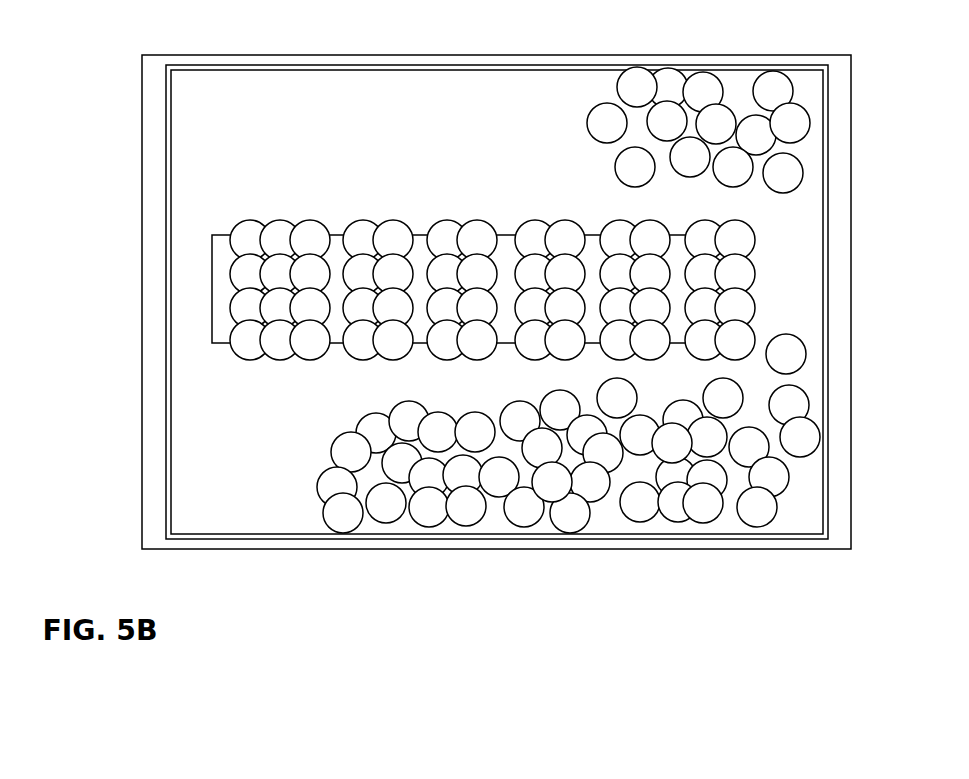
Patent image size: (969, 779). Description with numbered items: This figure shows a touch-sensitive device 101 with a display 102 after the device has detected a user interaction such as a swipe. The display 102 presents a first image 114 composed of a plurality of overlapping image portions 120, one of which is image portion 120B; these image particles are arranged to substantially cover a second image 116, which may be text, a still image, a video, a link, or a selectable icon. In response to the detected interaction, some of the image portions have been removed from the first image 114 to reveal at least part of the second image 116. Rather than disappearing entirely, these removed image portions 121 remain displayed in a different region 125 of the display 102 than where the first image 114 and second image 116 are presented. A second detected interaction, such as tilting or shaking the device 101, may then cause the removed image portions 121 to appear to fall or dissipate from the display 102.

The touch-sensitive device 101 is at (142, 210).
The display 102 is at (169, 463).
The first image 114 is at (480, 295).
The second image 116 is at (218, 348).
The image portions 120 is at (491, 240).
The image portion 120B is at (247, 220).
The removed image portions 121 is at (628, 0).
The region 125 is at (565, 571).